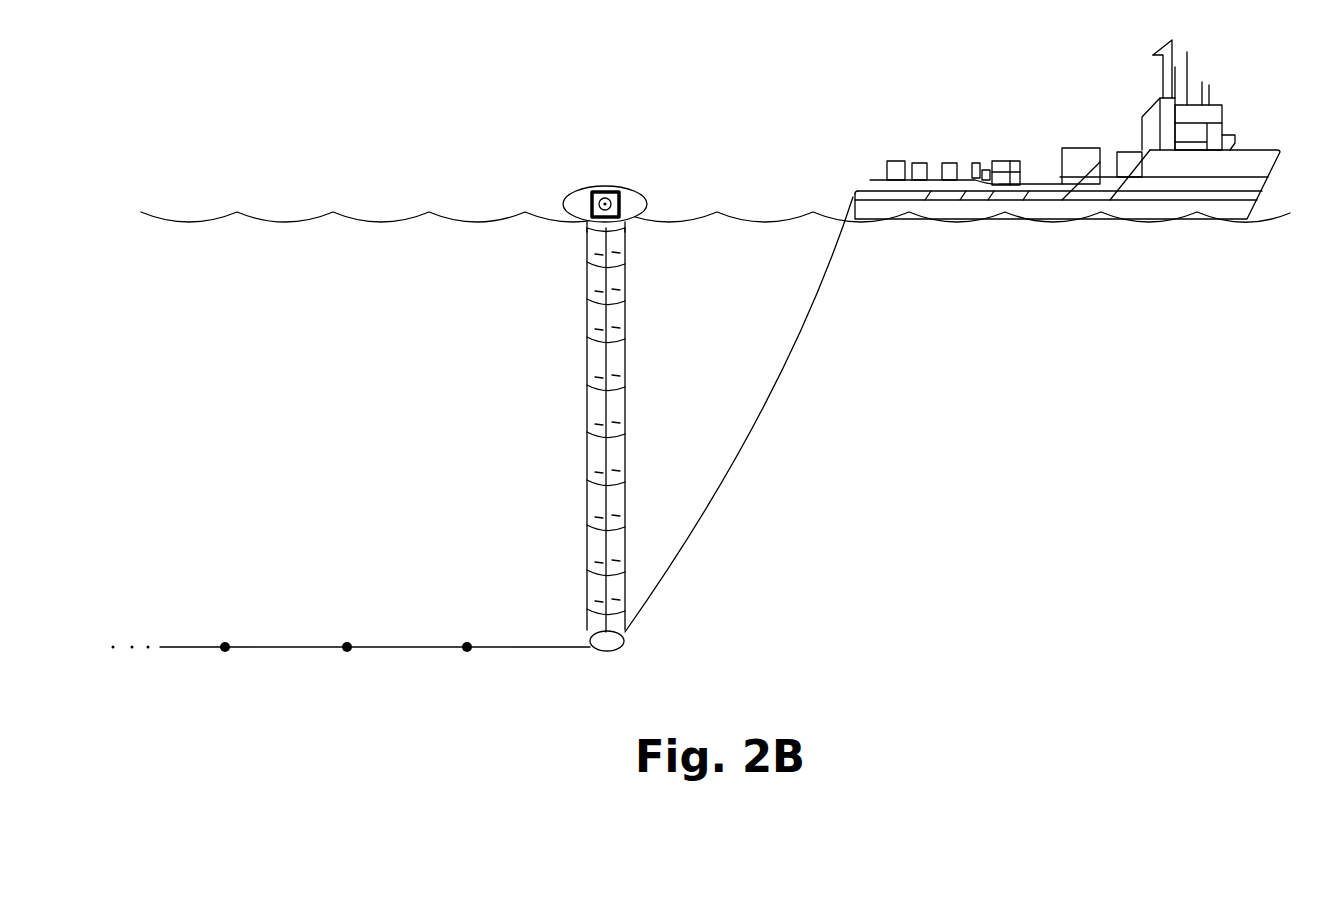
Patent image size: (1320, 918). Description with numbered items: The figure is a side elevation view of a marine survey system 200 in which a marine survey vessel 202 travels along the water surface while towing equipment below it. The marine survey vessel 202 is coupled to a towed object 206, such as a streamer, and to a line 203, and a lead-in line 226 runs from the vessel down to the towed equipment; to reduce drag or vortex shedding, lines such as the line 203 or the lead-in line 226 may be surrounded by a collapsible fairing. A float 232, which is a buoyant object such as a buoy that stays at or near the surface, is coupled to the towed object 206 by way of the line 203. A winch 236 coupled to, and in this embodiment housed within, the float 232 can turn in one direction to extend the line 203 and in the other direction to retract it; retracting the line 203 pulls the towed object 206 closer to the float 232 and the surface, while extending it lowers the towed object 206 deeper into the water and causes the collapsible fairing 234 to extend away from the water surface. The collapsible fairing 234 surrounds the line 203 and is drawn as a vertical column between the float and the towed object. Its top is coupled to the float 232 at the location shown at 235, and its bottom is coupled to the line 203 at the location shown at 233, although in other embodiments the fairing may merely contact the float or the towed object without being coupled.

The marine survey system 200 is at (320, 112).
The marine survey vessel 202 is at (1260, 148).
The line 203 is at (627, 360).
The towed object 206 is at (410, 650).
The lead-in line 226 is at (780, 368).
The float 232 is at (642, 192).
The coupling of fairing bottom to line 233 is at (583, 638).
The collapsible fairing 234 is at (627, 310).
The coupling of fairing top to float 235 is at (583, 228).
The winch 236 is at (606, 190).